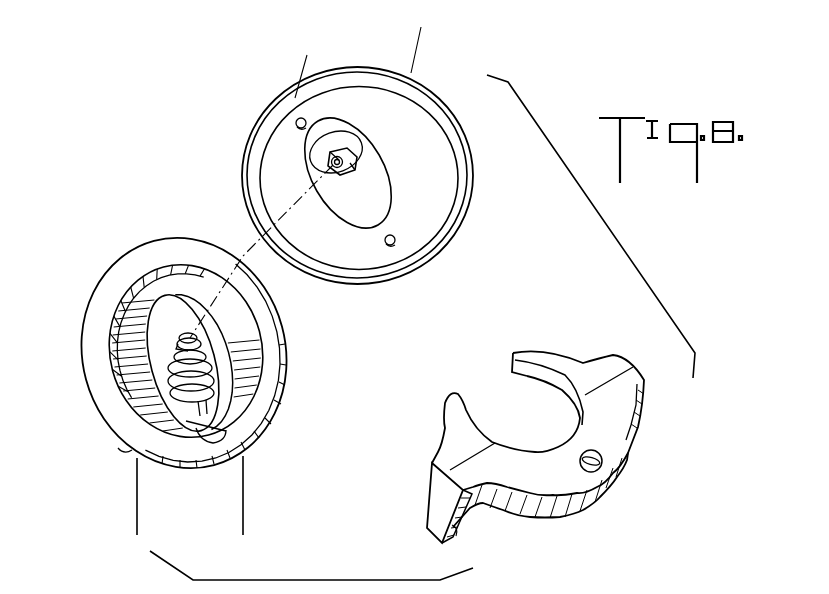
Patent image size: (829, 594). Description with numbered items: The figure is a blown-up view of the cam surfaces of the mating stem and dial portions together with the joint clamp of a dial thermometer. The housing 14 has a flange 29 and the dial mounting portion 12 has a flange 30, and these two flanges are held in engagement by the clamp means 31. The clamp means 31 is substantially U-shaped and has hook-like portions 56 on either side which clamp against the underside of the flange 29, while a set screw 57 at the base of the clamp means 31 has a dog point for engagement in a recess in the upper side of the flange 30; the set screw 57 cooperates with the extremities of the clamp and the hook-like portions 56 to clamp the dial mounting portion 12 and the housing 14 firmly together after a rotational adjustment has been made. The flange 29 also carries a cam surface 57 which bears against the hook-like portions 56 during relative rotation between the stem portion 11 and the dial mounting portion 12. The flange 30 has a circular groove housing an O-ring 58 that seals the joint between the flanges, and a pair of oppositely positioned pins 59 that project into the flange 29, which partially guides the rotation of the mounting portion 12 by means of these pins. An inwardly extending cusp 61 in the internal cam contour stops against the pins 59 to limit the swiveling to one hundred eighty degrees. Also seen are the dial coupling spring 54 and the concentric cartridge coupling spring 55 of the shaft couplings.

The stem portion 11 is at (126, 502).
The dial mounting portion 12 is at (468, 63).
The housing 14 is at (232, 478).
The flange 29 is at (127, 252).
The flange 30 is at (288, 110).
The clamp means 31 is at (622, 438).
The dial coupling spring 54 is at (348, 161).
The cartridge coupling spring 55 is at (346, 163).
The hook-like portions 56 is at (641, 391).
The set screw 57 is at (128, 445).
The O-ring 58 is at (364, 276).
The pins 59 is at (306, 119).
The cusp 61 is at (198, 437).